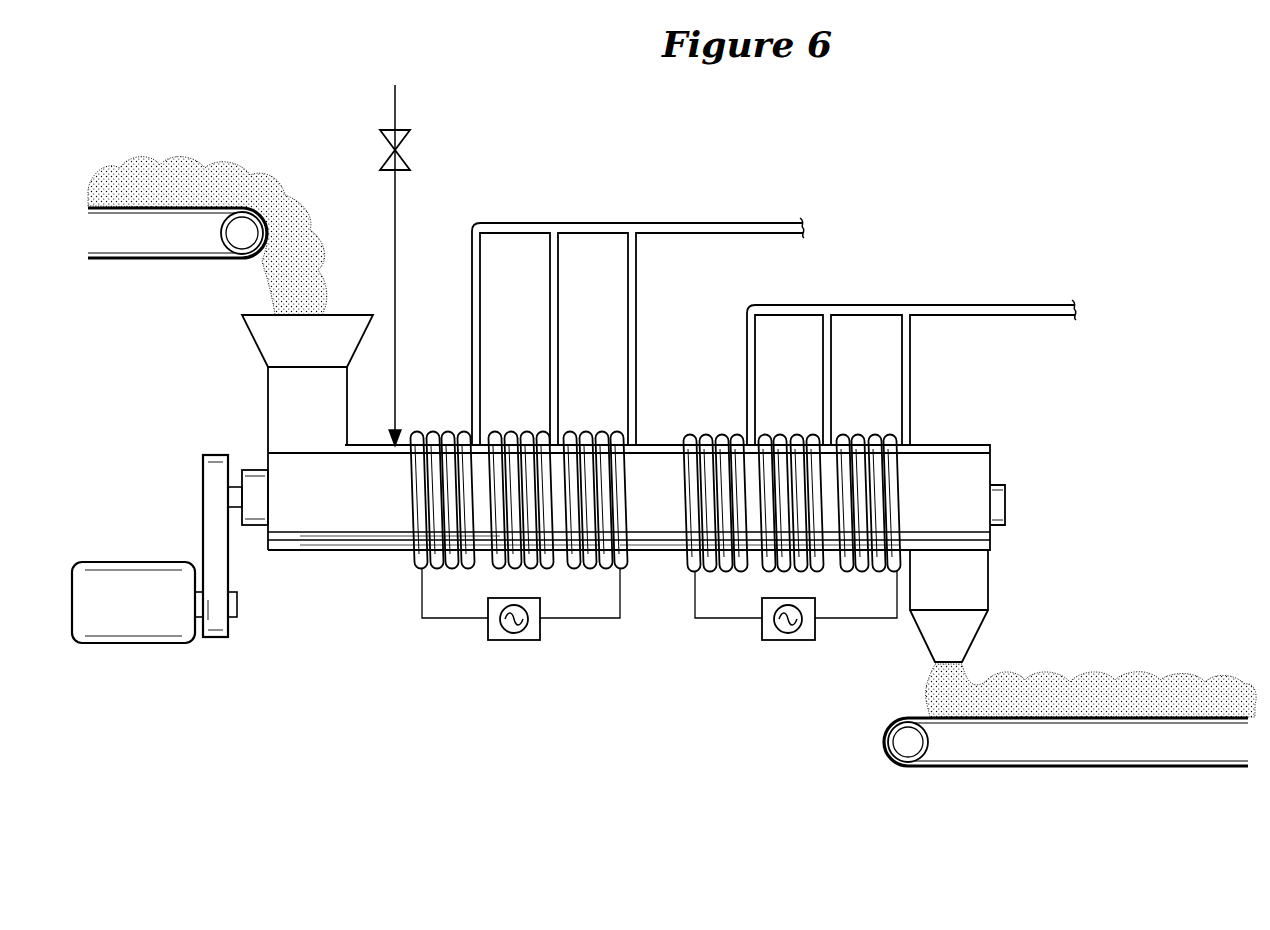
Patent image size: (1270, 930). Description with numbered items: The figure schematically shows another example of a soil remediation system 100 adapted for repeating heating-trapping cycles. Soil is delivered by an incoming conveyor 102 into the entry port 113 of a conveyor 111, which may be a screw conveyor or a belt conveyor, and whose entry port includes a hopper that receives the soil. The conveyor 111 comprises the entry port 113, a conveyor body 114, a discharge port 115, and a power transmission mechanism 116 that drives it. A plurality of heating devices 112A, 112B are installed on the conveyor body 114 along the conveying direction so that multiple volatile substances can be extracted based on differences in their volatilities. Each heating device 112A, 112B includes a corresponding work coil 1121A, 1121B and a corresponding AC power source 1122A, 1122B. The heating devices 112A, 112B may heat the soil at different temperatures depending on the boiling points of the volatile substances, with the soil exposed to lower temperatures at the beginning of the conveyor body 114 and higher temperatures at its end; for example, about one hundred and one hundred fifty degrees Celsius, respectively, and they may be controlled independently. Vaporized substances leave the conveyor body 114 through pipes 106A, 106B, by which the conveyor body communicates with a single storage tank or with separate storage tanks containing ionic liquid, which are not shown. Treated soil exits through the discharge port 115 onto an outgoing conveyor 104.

The soil remediation system 100 is at (890, 105).
The incoming conveyor 102 is at (137, 247).
The outgoing conveyor 104 is at (1013, 742).
The pipe 106A is at (593, 223).
The pipe 106B is at (943, 305).
The conveyor 111 is at (636, 477).
The heating device 112A is at (492, 533).
The heating device 112B is at (774, 533).
The work coil 1121A is at (427, 432).
The work coil 1121B is at (782, 438).
The AC power source 1122A is at (525, 642).
The AC power source 1122B is at (785, 642).
The entry port 113 is at (352, 314).
The conveyor body 114 is at (300, 545).
The discharge port 115 is at (977, 585).
The power transmission mechanism 116 is at (180, 494).